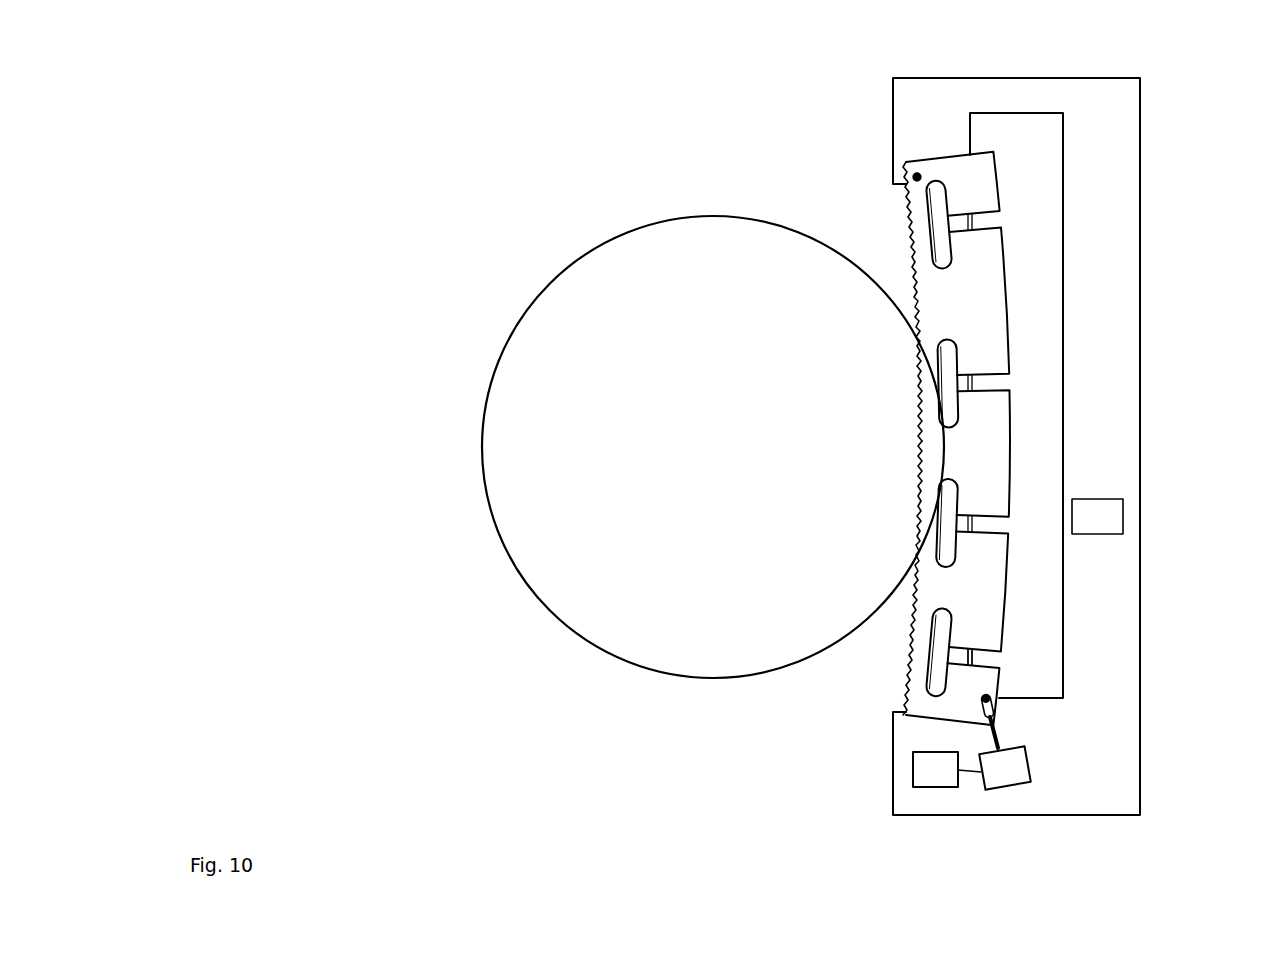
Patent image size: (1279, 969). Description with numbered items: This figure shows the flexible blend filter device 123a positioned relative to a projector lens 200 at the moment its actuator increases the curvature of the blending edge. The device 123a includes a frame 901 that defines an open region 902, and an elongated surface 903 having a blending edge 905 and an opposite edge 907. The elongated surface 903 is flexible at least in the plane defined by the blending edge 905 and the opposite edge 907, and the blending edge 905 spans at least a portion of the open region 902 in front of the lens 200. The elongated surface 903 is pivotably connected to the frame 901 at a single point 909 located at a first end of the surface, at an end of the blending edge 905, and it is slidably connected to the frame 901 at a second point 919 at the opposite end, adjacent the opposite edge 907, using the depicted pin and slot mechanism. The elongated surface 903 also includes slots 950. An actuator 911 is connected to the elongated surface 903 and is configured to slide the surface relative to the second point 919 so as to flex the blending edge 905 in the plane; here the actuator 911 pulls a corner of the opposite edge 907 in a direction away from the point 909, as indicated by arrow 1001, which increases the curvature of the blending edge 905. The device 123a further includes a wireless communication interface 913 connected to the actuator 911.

The device 123a is at (1163, 760).
The lens 200 is at (515, 552).
The frame 901 is at (1118, 168).
The open region 902 is at (885, 220).
The elongated surface 903 is at (975, 316).
The blending edge 905 is at (912, 663).
The opposite edge 907 is at (1008, 335).
The point 909 is at (917, 177).
The actuator 911 is at (1023, 778).
The wireless communication interface 913 is at (953, 780).
The second point 919 is at (982, 703).
The slots 950 is at (997, 658).
The arrow 1001 is at (1003, 712).